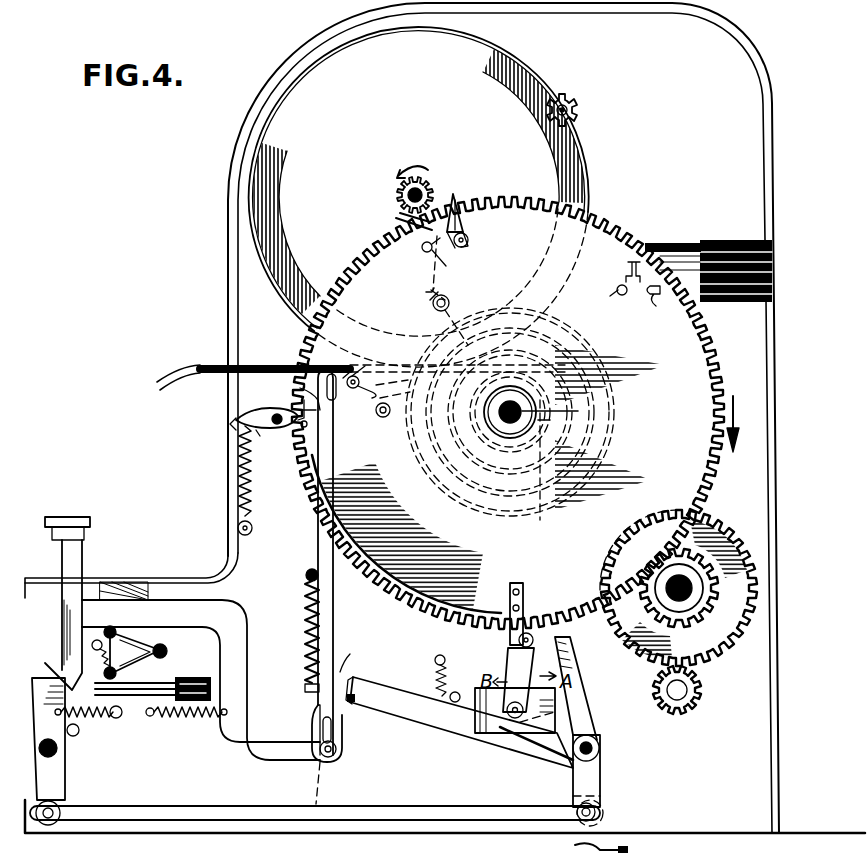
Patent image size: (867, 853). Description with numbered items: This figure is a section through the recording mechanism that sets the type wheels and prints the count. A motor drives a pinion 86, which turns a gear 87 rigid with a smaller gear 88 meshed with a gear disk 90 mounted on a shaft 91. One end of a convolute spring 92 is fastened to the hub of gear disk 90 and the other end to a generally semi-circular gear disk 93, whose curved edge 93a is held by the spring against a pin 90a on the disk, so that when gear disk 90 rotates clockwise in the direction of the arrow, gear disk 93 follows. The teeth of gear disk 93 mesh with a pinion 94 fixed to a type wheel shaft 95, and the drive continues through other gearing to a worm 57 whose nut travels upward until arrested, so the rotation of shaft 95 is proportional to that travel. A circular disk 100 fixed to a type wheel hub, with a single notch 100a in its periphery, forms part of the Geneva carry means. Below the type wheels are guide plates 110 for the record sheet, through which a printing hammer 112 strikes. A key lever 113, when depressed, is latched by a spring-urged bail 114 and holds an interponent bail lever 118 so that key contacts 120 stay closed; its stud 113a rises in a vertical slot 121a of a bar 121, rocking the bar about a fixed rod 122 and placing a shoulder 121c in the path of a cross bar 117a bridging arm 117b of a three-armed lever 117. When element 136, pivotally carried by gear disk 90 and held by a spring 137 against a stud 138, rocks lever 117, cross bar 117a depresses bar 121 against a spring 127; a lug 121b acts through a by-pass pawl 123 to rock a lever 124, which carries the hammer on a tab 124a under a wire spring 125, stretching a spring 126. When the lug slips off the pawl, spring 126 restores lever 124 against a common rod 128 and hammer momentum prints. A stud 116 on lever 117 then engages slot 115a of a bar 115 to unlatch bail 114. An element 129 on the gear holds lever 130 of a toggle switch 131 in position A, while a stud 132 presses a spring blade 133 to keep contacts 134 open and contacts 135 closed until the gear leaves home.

The worm 57 is at (583, 843).
The pinion 86 is at (682, 701).
The gear 87 is at (716, 648).
The smaller gear 88 is at (706, 612).
The gear disk 90 is at (706, 390).
The pin 90a is at (450, 306).
The shaft 91 is at (538, 454).
The convolute spring 92 is at (438, 486).
The gear disk 93 is at (373, 206).
The curved edge 93a is at (428, 290).
The pinion 94 is at (391, 189).
The type wheel shaft 95 is at (402, 213).
The circular disk 100 is at (468, 50).
The notch 100a is at (556, 98).
The guide plates 110 is at (214, 366).
The printing hammer 112 is at (384, 420).
The key lever 113 is at (76, 574).
The stud 113a is at (342, 783).
The spring-urged bail 114 is at (68, 746).
The bar 115 is at (244, 812).
The slot 115a is at (604, 814).
The stud 116 is at (596, 804).
The three-armed lever 117 is at (598, 748).
The cross bar 117a is at (350, 706).
The arm 117b is at (442, 716).
The interponent bail lever 118 is at (168, 650).
The common key contacts 120 is at (120, 700).
The bar 121 is at (322, 552).
The vertical slot 121a is at (322, 728).
The lug 121b is at (300, 390).
The shoulder 121c is at (346, 678).
The fixed rod 122 is at (354, 392).
The by-pass pawl 123 is at (300, 432).
The lever 124 is at (266, 432).
The tab 124a is at (382, 425).
The wire spring 125 is at (364, 372).
The spring 126 is at (248, 508).
The spring 127 is at (306, 632).
The common rod 128 is at (236, 452).
The element 129 is at (512, 640).
The lever 130 is at (512, 660).
The toggle switch 131 is at (500, 726).
The stud 132 is at (618, 296).
The spring blade 133 is at (626, 276).
The contacts 134 is at (656, 306).
The contacts 135 is at (664, 248).
The element 136 is at (460, 208).
The spring 137 is at (458, 248).
The stud 138 is at (419, 256).